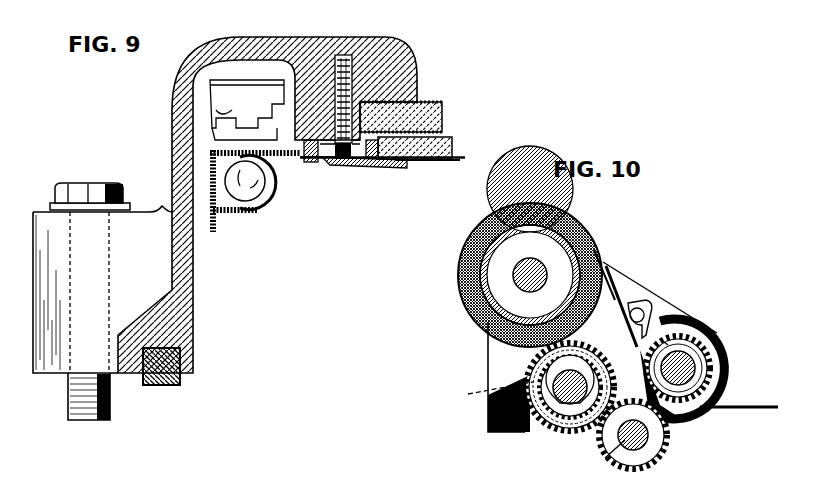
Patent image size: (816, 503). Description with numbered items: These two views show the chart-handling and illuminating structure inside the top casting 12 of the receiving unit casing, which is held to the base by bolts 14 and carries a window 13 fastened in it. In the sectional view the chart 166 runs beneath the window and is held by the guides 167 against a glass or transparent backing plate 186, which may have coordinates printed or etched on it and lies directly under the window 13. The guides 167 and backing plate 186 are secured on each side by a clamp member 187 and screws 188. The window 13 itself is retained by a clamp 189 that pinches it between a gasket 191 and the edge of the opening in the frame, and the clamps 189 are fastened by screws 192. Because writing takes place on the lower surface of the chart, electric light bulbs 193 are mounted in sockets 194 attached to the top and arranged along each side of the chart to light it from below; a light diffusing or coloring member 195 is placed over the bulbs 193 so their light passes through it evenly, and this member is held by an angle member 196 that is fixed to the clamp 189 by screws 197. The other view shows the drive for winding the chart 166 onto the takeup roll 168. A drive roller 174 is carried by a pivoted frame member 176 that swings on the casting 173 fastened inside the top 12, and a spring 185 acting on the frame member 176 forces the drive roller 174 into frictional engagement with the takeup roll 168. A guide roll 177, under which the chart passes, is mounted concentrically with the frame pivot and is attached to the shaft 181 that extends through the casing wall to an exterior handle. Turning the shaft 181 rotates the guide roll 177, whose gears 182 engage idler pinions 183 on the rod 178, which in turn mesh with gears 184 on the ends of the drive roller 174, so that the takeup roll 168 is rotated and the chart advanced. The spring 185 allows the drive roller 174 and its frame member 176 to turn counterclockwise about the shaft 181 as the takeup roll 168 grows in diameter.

In FIG. 9, the top casting 12 is at (172, 100).
In FIG. 9, the window 13 is at (440, 108).
In FIG. 9, the bolts 14 is at (80, 190).
In FIG. 9, the chart 166 is at (462, 160).
In FIG. 10, the chart 166 is at (748, 410).
In FIG. 9, the guides 167 is at (426, 164).
In FIG. 10, the takeup roll 168 is at (566, 213).
In FIG. 10, the casting 173 is at (620, 280).
In FIG. 10, the drive roller 174 is at (548, 432).
In FIG. 10, the frame member 176 is at (678, 422).
In FIG. 10, the guide roll 177 is at (710, 342).
In FIG. 10, the rod 178 is at (600, 460).
In FIG. 10, the shaft 181 is at (695, 366).
In FIG. 10, the gears 182 is at (680, 332).
In FIG. 10, the idler pinions 183 is at (663, 466).
In FIG. 10, the gears 184 is at (489, 393).
In FIG. 10, the springs 185 is at (650, 303).
In FIG. 9, the backing plate 186 is at (452, 146).
In FIG. 9, the clamp member 187 is at (397, 164).
In FIG. 9, the screws 188 is at (368, 167).
In FIG. 9, the clamp 189 is at (338, 160).
In FIG. 9, the gasket 191 is at (418, 102).
In FIG. 9, the screws 192 is at (331, 58).
In FIG. 9, the electric light bulbs 193 is at (249, 206).
In FIG. 9, the sockets 194 is at (230, 95).
In FIG. 9, the light diffusing or coloring member 195 is at (276, 196).
In FIG. 9, the angle member 196 is at (213, 233).
In FIG. 9, the screws 197 is at (308, 162).